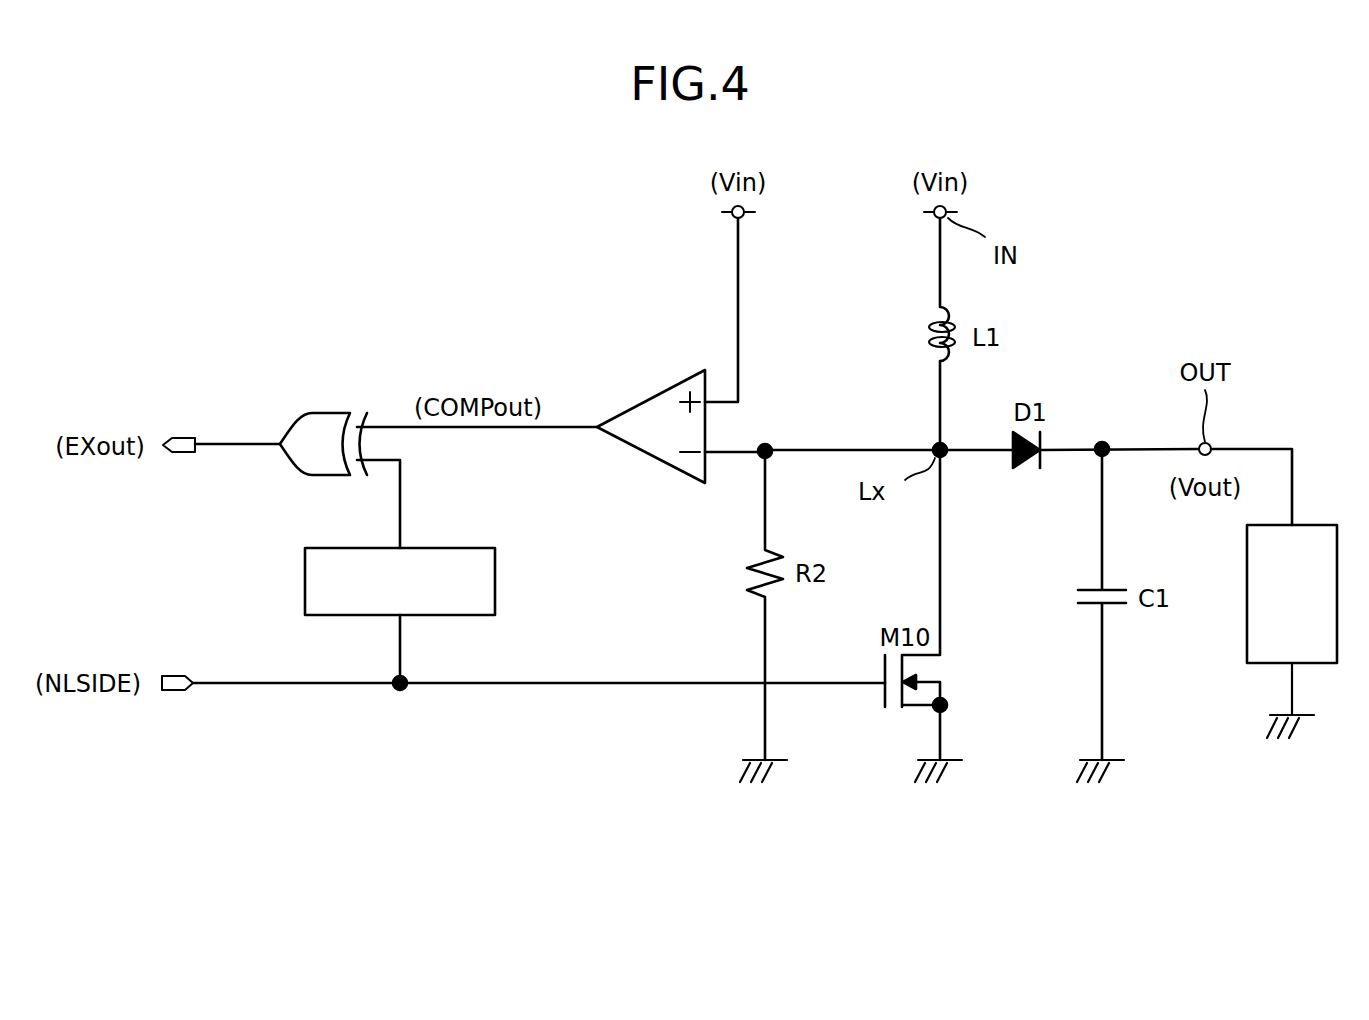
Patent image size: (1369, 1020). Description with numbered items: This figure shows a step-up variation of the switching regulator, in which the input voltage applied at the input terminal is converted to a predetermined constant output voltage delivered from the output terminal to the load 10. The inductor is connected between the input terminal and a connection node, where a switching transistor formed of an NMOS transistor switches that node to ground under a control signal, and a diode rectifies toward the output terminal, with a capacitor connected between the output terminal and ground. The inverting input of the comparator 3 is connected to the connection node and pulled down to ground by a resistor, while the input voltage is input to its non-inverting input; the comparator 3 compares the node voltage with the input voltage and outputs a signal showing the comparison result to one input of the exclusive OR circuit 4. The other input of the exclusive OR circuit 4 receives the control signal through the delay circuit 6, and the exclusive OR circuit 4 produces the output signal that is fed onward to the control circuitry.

The comparator 3 is at (672, 385).
The exclusive OR circuit 4 is at (290, 420).
The delay circuit 6 is at (305, 577).
The load 10 is at (1305, 524).